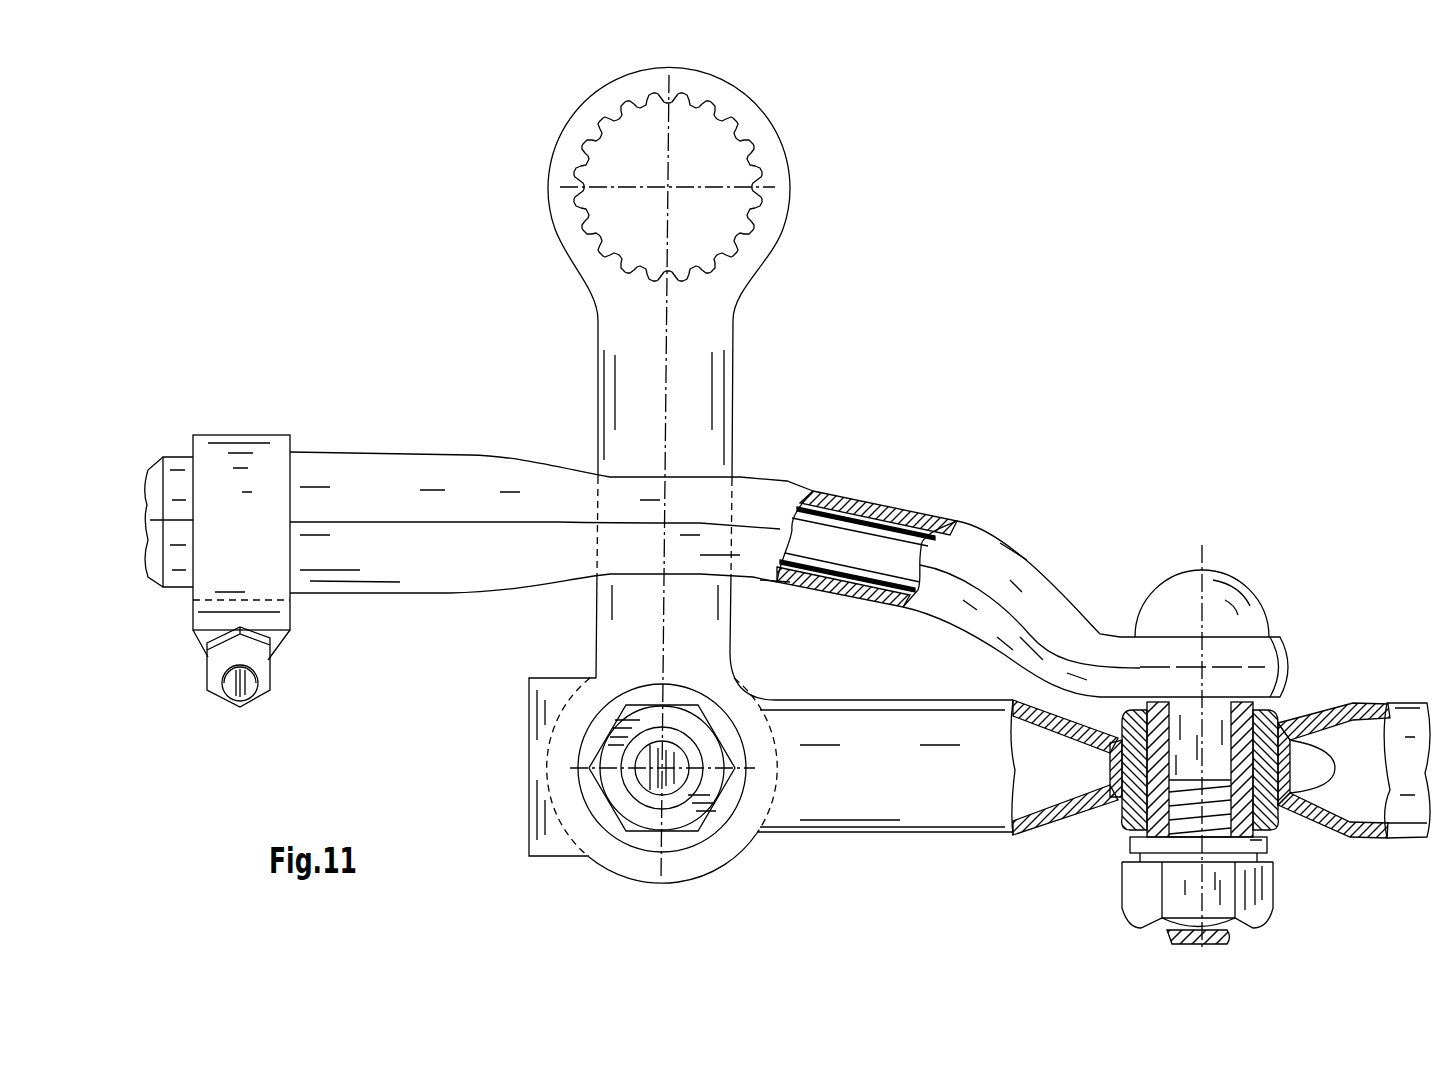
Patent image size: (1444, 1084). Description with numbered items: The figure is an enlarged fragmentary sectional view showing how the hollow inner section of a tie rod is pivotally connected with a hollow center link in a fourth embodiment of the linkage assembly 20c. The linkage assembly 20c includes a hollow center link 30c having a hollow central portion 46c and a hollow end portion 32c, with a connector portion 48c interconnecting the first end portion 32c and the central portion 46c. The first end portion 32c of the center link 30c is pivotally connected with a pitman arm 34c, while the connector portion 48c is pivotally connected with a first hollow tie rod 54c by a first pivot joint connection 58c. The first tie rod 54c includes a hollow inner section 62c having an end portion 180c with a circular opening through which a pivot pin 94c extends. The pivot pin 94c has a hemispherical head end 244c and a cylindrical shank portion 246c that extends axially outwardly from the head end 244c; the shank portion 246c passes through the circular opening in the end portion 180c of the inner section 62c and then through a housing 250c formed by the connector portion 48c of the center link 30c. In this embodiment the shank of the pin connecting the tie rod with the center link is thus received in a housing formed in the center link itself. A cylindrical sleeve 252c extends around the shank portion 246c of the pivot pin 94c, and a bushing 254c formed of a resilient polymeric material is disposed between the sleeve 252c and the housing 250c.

The linkage assembly 20c is at (1040, 272).
The pitman arm 34c is at (713, 297).
The hollow inner section 62c is at (487, 470).
The first hollow tie rod 54c is at (884, 495).
The first pivot joint connection 58c is at (1218, 555).
The hemispherical head end 244c is at (1160, 600).
The end portion 180c is at (1275, 640).
The cylindrical sleeve 252c is at (1280, 752).
The housing 250c is at (1288, 755).
The bushing 254c is at (1302, 812).
The hollow central portion 46c is at (1410, 832).
The pivot pin 94c is at (1240, 948).
The cylindrical shank portion 246c is at (1268, 843).
The connector portion 48c is at (1078, 815).
The hollow center link 30c is at (958, 848).
The hollow end portion 32c is at (875, 806).